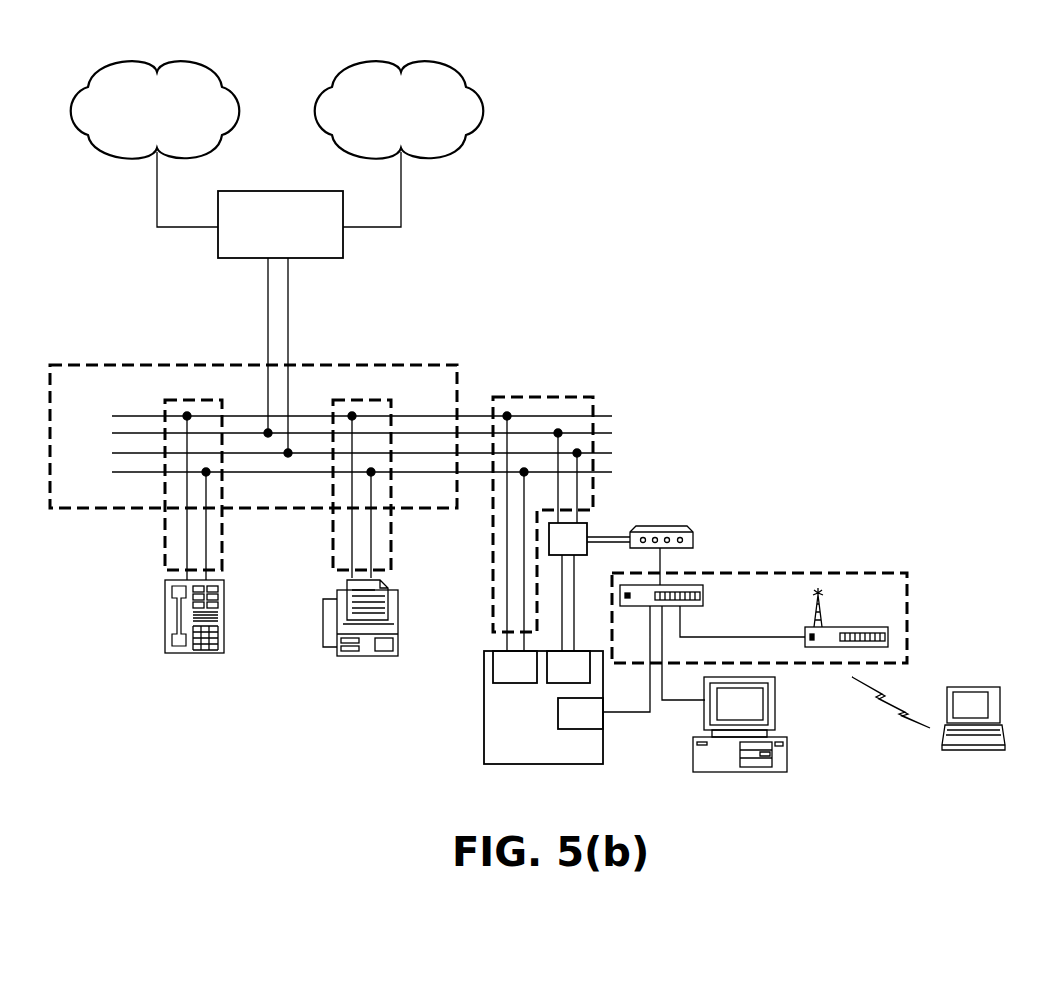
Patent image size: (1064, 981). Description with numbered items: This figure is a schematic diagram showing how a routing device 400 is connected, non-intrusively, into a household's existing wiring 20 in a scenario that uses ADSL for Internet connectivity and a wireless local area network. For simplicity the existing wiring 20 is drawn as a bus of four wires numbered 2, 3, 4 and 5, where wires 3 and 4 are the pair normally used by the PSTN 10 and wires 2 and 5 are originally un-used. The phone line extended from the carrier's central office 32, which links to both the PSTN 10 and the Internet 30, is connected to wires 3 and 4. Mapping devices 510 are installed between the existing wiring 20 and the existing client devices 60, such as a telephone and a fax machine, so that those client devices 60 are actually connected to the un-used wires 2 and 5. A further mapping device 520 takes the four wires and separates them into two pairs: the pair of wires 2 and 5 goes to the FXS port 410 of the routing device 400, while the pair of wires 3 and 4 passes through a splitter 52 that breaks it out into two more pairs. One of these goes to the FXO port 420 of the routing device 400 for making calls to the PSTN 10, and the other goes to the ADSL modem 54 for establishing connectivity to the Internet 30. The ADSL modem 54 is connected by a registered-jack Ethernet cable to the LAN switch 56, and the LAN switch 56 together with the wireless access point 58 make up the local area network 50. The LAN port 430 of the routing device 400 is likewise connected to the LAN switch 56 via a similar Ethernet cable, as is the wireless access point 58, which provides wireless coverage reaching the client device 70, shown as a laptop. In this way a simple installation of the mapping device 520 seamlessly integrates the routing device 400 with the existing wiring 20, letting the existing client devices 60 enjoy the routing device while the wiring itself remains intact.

The PSTN 10 is at (125, 60).
The Internet 30 is at (360, 60).
The carrier's central office 32 is at (310, 259).
The existing wiring 20 is at (110, 363).
The wire 2 is at (344, 416).
The wire 3 is at (344, 434).
The wire 4 is at (344, 454).
The wire 5 is at (344, 473).
The mapping device 510 is at (222, 545).
The mapping device 520 is at (538, 397).
The splitter 52 is at (590, 522).
The ADSL modem 54 is at (678, 528).
The LAN switch 56 is at (695, 585).
The local area network 50 is at (810, 572).
The wireless access point 58 is at (877, 626).
The client device 60 is at (400, 610).
The client device 70 is at (985, 684).
The routing device 400 is at (509, 707).
The FXS port 410 is at (515, 667).
The FXO port 420 is at (568, 667).
The LAN port 430 is at (580, 713).